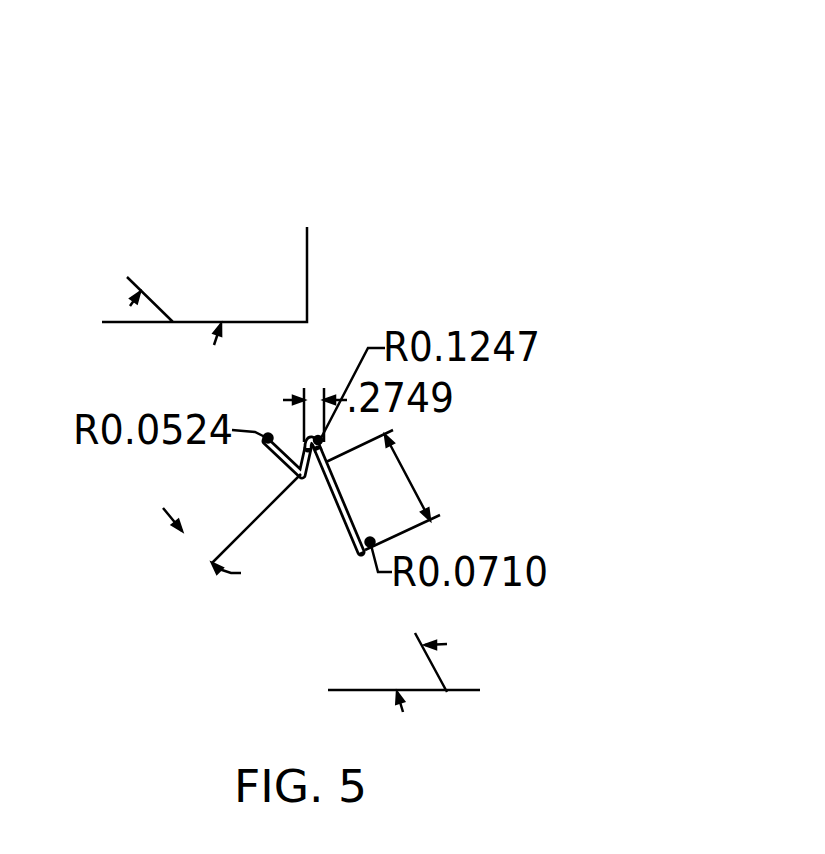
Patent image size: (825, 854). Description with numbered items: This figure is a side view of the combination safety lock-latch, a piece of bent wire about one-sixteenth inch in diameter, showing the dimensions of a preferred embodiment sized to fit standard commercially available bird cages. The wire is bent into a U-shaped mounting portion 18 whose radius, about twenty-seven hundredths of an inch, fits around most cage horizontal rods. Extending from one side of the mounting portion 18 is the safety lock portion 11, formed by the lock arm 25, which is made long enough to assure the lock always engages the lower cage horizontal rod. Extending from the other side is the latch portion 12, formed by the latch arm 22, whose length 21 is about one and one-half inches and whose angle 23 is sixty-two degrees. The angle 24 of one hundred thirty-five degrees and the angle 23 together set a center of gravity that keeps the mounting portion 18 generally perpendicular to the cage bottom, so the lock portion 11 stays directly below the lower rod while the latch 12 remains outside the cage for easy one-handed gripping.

The safety lock portion 11 is at (262, 468).
The latch portion 12 is at (360, 554).
The U-shaped mounting portion 18 is at (308, 442).
The length 21 is at (500, 442).
The latch arm 22 is at (343, 521).
The angle 23 is at (478, 659).
The angle 24 is at (213, 233).
The lock arm 25 is at (266, 443).